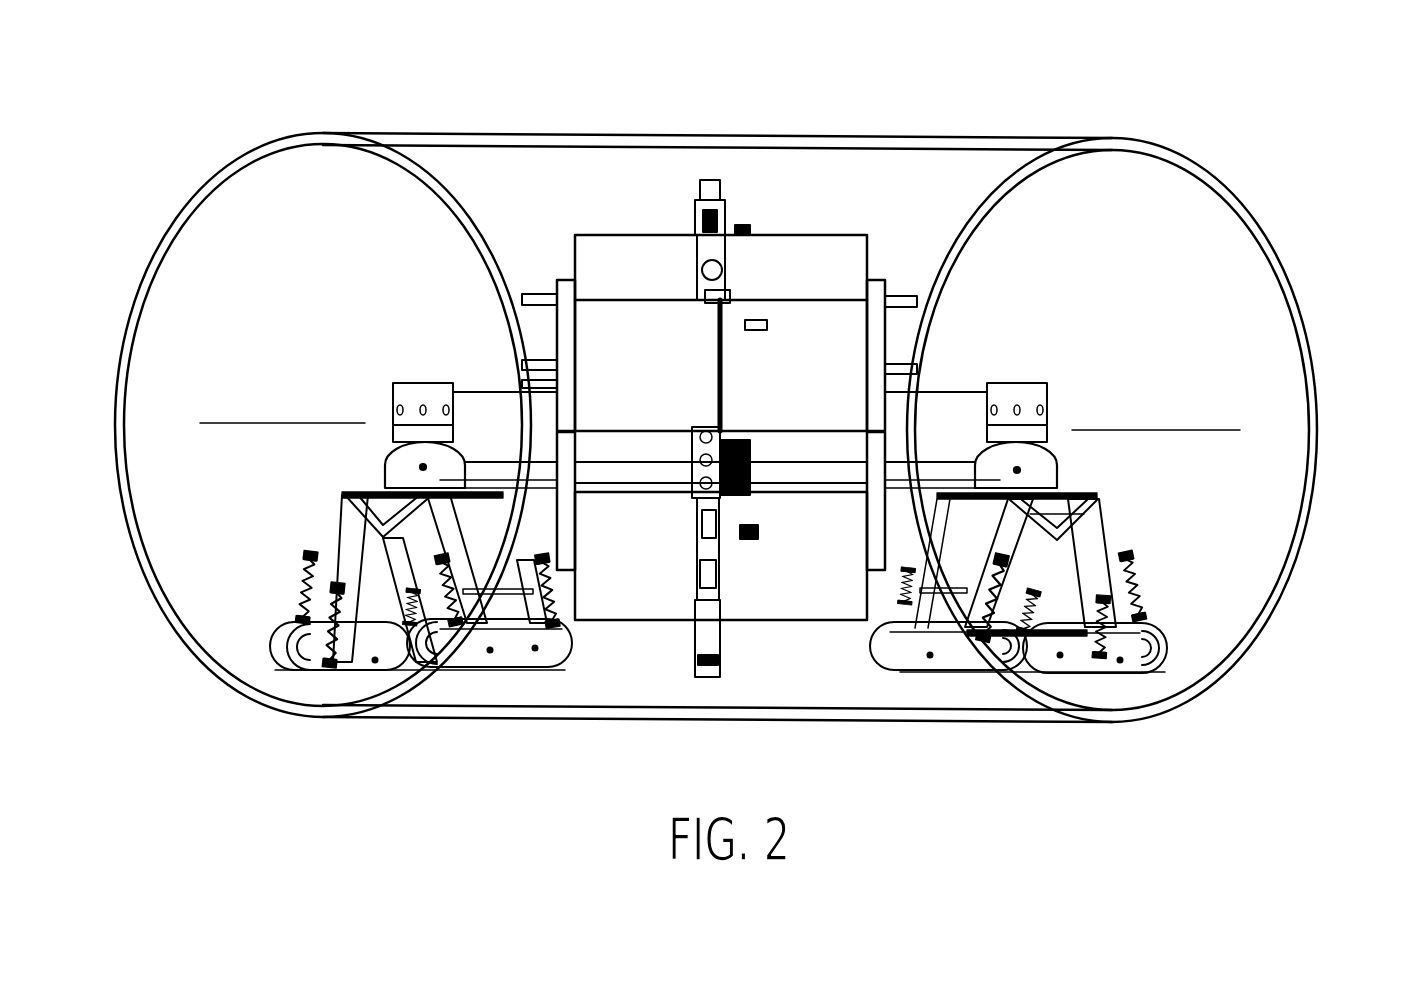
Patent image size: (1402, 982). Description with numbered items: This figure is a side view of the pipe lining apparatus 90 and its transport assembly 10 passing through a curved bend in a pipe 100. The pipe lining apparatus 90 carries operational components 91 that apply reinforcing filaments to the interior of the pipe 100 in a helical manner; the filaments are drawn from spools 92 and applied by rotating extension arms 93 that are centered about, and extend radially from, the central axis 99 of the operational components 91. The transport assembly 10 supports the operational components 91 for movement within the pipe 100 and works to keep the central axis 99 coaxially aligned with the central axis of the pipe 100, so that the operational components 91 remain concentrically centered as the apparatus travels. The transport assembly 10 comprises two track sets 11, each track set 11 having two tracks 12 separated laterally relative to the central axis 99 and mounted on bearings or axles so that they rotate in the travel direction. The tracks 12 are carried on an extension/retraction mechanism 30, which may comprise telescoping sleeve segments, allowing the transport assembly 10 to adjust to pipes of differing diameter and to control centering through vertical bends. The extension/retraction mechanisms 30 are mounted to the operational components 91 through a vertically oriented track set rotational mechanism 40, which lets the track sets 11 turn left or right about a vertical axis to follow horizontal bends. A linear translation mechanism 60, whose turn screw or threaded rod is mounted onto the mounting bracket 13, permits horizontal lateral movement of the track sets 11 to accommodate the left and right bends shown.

The pipe 100 is at (1112, 137).
The pipe lining apparatus 90 is at (1123, 273).
The operational components 91 is at (556, 209).
The spools 92 is at (812, 332).
The rotating extension arms 93 is at (690, 444).
The central axis 99 is at (268, 422).
The transport assembly 10 is at (263, 582).
The track set 11 is at (380, 484).
The tracks 12 is at (433, 650).
The mounting bracket 13 is at (410, 380).
The extension/retraction mechanism 30 is at (345, 530).
The track set rotational mechanism 40 is at (378, 488).
The linear translation mechanism 60 is at (388, 452).